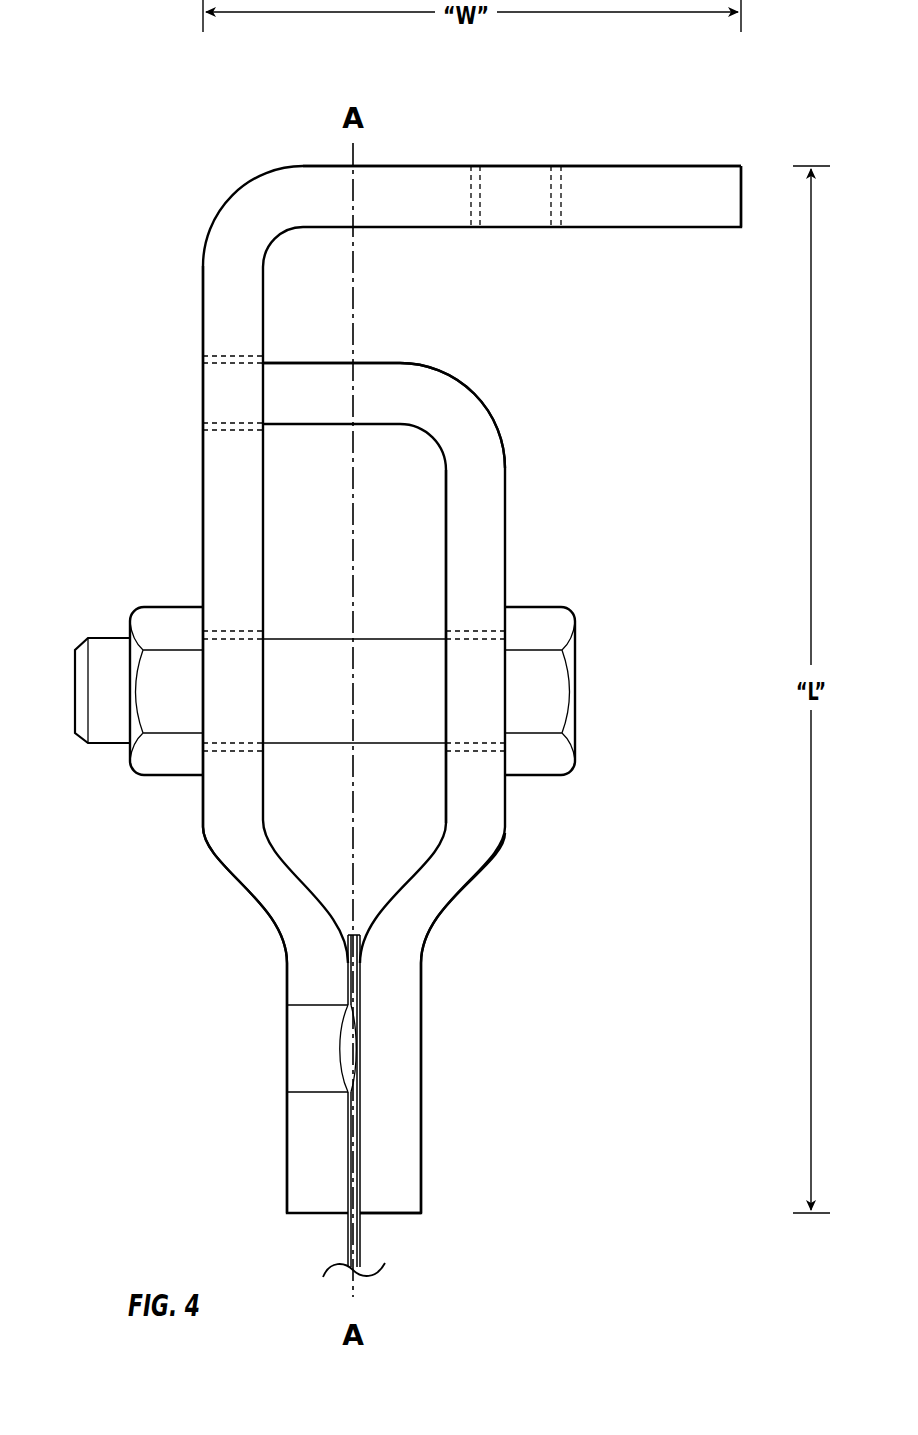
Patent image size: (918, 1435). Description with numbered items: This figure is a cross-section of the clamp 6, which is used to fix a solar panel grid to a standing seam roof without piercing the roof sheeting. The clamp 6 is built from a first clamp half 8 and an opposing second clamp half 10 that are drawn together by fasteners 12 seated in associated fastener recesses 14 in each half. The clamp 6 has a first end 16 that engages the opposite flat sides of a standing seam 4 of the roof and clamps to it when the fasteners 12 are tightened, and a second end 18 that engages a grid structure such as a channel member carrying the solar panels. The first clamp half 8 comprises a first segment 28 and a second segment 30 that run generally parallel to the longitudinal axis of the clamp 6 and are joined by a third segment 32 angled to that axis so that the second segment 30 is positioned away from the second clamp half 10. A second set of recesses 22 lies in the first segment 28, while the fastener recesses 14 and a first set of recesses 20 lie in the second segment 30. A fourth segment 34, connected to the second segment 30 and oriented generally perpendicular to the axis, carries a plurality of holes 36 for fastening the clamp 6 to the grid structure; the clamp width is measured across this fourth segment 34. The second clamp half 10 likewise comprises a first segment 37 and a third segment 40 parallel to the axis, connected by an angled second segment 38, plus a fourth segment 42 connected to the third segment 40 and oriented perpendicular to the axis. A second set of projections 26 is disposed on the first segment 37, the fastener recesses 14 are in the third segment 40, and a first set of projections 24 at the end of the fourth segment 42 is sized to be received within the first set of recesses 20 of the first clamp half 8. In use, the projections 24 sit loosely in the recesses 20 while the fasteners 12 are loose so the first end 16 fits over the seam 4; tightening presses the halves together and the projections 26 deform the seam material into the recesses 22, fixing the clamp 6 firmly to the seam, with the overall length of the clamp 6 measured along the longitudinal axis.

The standing seam 4 is at (362, 1217).
The clamp 6 is at (98, 206).
The first clamp half 8 is at (170, 567).
The second clamp half 10 is at (507, 482).
The fastener 12 is at (558, 615).
The fastener recess 14 is at (465, 632).
The first end 16 is at (445, 1126).
The second end 18 is at (406, 116).
The first set of recesses 20 is at (203, 357).
The second set of recesses 22 is at (310, 1055).
The first set of projections 24 is at (223, 387).
The second set of projections 26 is at (373, 1055).
The first segment 28 is at (313, 1158).
The second segment 30 is at (228, 507).
The third segment 32 is at (268, 902).
The fourth segment 34 is at (662, 190).
The holes 36 is at (512, 198).
The first segment 37 is at (405, 1165).
The second segment 38 is at (440, 895).
The third segment 40 is at (478, 540).
The fourth segment 42 is at (395, 385).